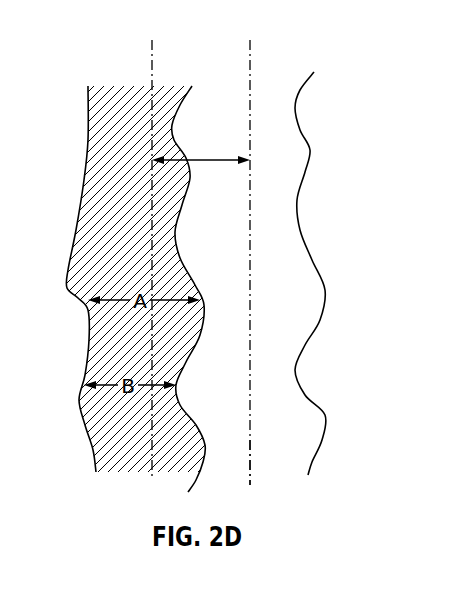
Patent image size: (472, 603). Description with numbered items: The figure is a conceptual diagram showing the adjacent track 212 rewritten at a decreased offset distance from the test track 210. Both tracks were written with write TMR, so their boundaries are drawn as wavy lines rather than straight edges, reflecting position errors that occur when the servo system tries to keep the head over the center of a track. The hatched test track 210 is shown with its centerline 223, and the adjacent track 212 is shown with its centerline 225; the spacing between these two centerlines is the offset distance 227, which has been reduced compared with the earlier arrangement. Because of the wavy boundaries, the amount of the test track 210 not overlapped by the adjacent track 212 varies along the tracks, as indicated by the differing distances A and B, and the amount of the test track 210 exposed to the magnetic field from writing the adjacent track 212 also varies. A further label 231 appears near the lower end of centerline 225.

The test track 210 is at (108, 229).
The adjacent track 212 is at (281, 228).
The centerline 223 is at (155, 244).
The centerline 225 is at (252, 247).
The offset distance 227 is at (201, 148).
The axis end / reference line 231 is at (250, 477).